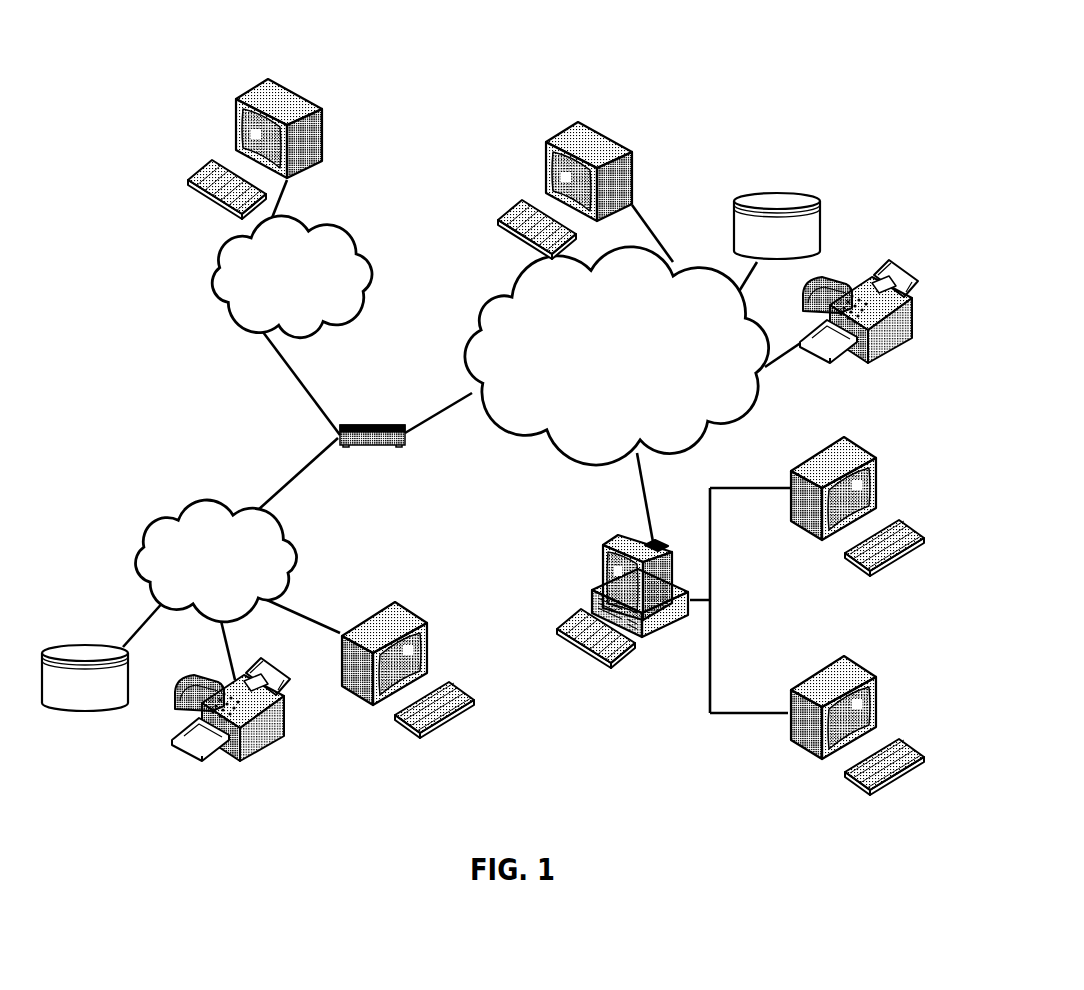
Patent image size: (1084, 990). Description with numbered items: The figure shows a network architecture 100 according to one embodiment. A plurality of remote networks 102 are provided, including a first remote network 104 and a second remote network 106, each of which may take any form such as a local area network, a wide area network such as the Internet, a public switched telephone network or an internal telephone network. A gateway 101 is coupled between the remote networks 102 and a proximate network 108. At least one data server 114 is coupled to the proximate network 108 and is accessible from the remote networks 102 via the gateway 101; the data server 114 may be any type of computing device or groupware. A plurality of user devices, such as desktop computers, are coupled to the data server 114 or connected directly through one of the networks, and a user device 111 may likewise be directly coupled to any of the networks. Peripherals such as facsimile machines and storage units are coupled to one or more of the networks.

The architecture 100 is at (166, 62).
The gateway 101 is at (353, 425).
The remote networks 102 is at (196, 342).
The first remote network 104 is at (147, 530).
The second remote network 106 is at (362, 250).
The proximate network 108 is at (723, 428).
The user device 111 is at (632, 153).
The data server 114 is at (603, 555).